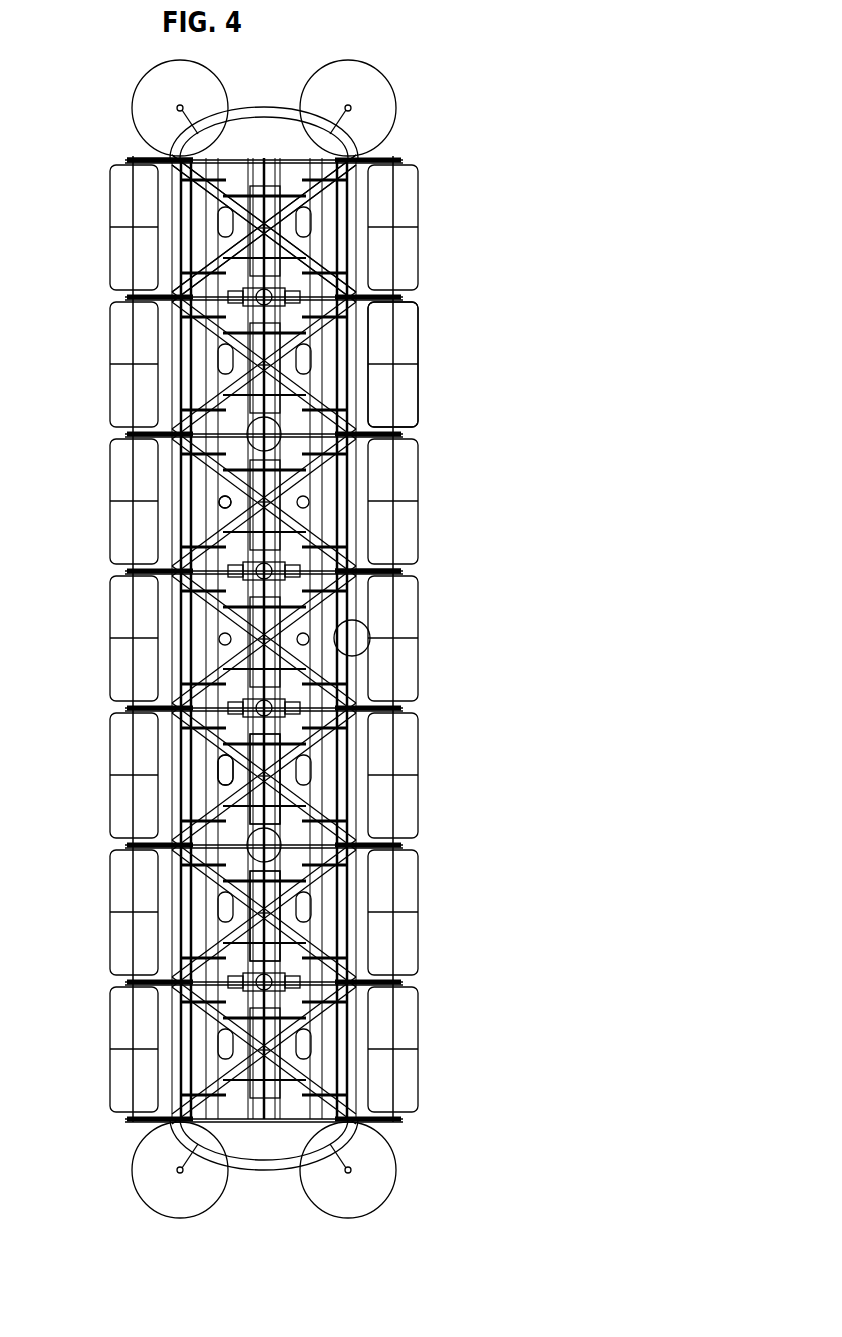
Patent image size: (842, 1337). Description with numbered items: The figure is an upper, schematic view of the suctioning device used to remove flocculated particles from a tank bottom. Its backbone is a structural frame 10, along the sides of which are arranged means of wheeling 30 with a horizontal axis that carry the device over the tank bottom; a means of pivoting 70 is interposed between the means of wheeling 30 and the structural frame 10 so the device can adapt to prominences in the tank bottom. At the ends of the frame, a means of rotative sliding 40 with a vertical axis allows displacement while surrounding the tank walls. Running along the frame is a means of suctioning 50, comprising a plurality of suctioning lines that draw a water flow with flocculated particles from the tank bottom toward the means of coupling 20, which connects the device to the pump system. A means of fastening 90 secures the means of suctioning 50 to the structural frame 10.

The structural frame 10 is at (330, 262).
The means of coupling 20 is at (370, 632).
The means of wheeling 30 is at (418, 342).
The means of rotative sliding 40 is at (393, 92).
The means of suctioning 50 is at (220, 768).
The means of pivoting 70 is at (177, 160).
The means of fastening 90 is at (247, 947).